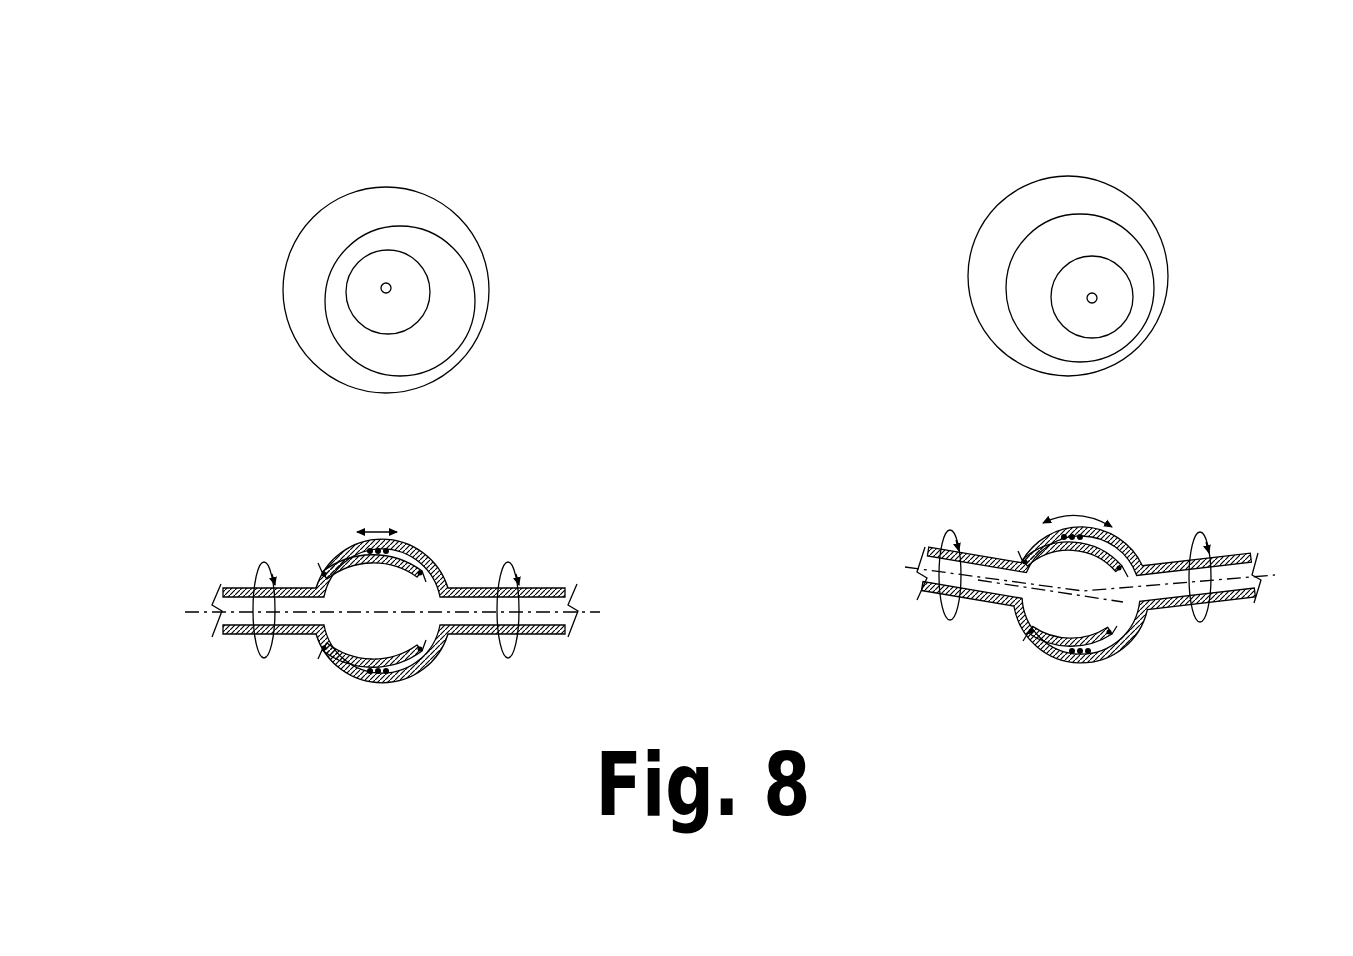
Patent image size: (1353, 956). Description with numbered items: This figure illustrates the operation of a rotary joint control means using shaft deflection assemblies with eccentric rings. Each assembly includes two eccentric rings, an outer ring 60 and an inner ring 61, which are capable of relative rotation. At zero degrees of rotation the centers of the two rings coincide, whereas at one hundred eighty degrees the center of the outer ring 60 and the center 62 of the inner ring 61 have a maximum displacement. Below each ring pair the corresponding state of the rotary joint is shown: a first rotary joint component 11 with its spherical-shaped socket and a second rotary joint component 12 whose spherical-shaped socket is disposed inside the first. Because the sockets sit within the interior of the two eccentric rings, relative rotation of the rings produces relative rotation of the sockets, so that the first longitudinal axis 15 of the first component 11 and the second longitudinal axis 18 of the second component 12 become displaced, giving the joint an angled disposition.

The first rotary joint component 11 is at (493, 550).
The second rotary joint component 12 is at (243, 660).
The first longitudinal axis 15 is at (1230, 578).
The second longitudinal axis 18 is at (990, 580).
The outer ring 60 is at (353, 243).
The inner ring 61 is at (367, 330).
The center of the inner ring 62 is at (388, 283).